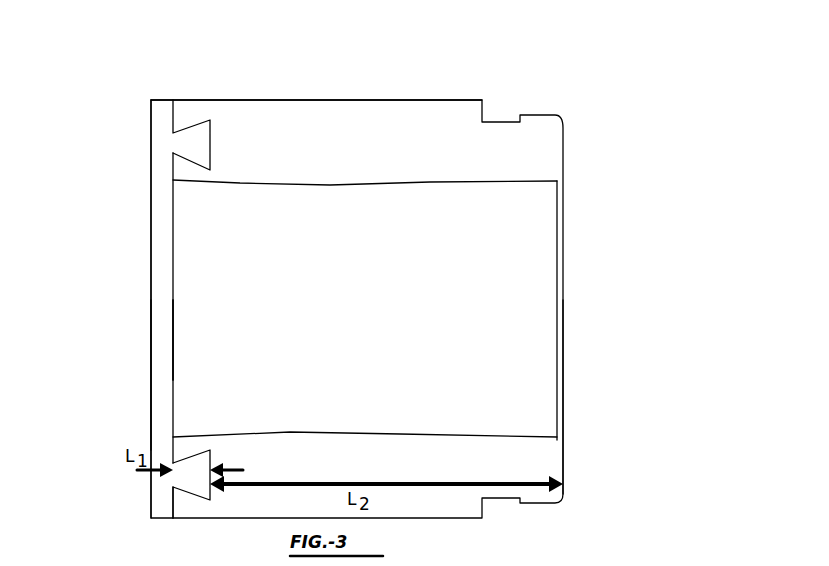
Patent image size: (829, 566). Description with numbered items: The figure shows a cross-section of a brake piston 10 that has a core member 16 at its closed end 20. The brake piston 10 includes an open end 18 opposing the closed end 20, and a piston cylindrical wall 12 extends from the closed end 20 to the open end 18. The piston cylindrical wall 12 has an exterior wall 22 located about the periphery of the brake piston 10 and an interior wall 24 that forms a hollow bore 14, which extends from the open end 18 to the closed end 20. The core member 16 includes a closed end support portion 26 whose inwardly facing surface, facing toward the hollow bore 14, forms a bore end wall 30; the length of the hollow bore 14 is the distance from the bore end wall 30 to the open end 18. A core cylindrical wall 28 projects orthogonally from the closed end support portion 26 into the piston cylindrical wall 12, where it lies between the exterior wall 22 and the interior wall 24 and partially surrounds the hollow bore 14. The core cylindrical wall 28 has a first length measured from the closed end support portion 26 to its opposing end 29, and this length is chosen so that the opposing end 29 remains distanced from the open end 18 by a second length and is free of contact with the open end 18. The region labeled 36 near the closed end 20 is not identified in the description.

The fitting assembly 10 is at (655, 168).
The body 12 is at (532, 140).
The internal cavity 14 is at (525, 283).
The first end 16 is at (158, 378).
The second end 18 is at (562, 472).
The end wall 20 is at (151, 287).
The outer wall 22 is at (223, 100).
The inner surface 24 is at (343, 188).
The inner wall 26 is at (163, 223).
The upper barb 28 is at (197, 145).
The lower barb 29 is at (210, 460).
The retention member 30 is at (173, 333).
The lower wall portion 36 is at (173, 490).